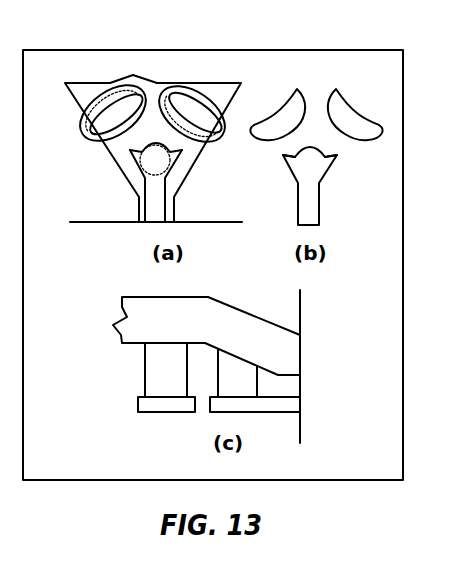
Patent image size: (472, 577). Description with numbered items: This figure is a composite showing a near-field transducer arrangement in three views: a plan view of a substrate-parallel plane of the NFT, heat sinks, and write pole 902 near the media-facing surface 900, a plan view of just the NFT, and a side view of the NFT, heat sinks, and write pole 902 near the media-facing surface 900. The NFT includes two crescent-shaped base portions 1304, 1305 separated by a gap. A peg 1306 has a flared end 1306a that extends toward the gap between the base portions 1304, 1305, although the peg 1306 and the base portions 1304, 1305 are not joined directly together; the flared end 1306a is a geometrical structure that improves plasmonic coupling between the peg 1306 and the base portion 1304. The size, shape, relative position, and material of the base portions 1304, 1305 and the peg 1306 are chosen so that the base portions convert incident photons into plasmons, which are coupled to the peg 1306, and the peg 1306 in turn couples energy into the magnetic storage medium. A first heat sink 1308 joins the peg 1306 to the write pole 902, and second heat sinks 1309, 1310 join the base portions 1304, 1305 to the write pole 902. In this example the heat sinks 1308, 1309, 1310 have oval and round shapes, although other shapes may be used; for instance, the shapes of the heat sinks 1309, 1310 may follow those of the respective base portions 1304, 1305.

The media-facing surface 900 is at (107, 222).
The write pole 902 is at (105, 83).
The crescent-shaped base portion 1304 is at (108, 147).
The crescent-shaped base portion 1305 is at (200, 148).
The peg 1306 is at (153, 210).
The flared end 1306a is at (285, 157).
The first heat sink 1308 is at (150, 162).
The second heat sink 1309 is at (88, 108).
The second heat sink 1310 is at (185, 84).